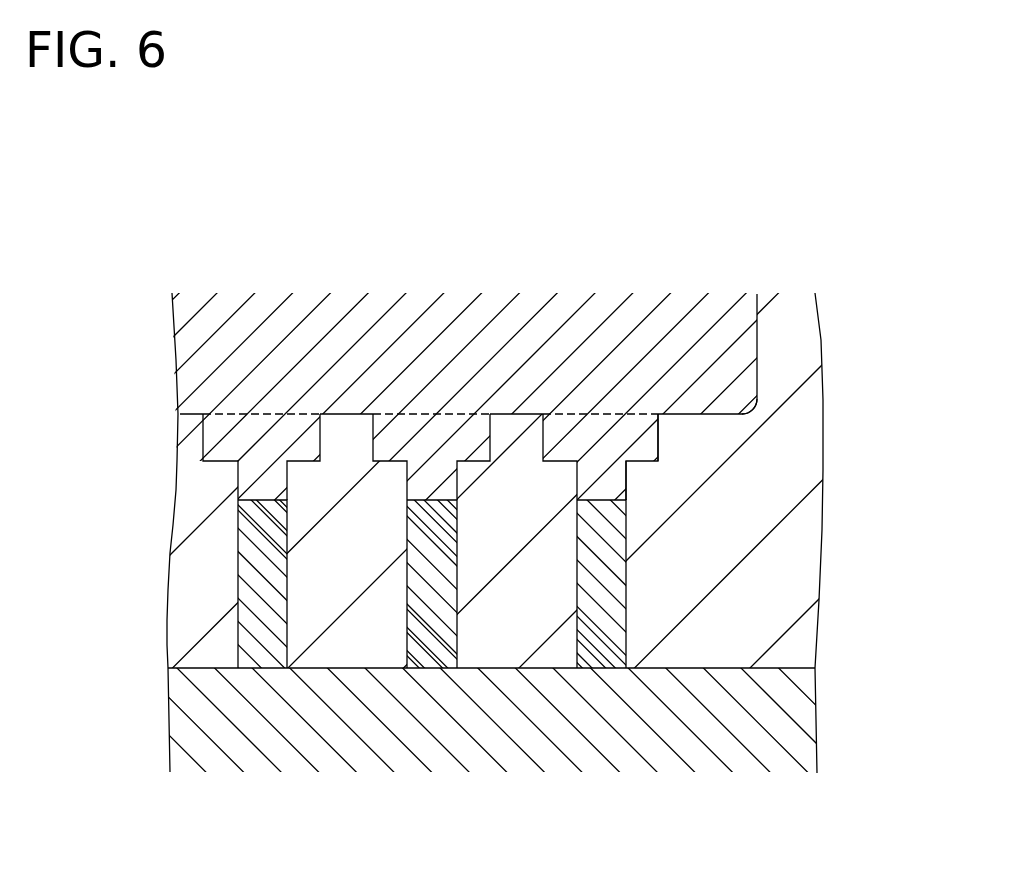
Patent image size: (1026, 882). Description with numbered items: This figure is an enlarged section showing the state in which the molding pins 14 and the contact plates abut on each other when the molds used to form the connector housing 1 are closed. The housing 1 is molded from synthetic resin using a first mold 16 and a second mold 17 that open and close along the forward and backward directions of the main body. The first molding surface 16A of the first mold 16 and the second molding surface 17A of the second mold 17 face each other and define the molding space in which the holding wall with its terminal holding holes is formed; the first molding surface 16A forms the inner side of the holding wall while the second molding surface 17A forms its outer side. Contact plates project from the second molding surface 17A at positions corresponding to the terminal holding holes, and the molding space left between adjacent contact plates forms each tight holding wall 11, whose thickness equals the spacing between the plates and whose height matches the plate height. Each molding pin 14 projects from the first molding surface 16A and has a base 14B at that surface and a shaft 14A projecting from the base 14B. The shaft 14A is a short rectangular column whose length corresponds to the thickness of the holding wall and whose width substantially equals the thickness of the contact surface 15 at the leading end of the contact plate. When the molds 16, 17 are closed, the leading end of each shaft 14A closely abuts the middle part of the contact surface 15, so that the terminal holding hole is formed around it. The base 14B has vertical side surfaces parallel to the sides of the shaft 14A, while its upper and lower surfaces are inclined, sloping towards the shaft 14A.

The housing 1 is at (807, 582).
The tight holding wall 11 is at (363, 620).
The molding pin 14 is at (232, 443).
The shaft 14A is at (613, 482).
The base 14B is at (650, 447).
The contact surface 15 is at (260, 652).
The first mold 16 is at (737, 321).
The first molding surface 16A is at (718, 413).
The second mold 17 is at (780, 720).
The second molding surface 17A is at (786, 668).